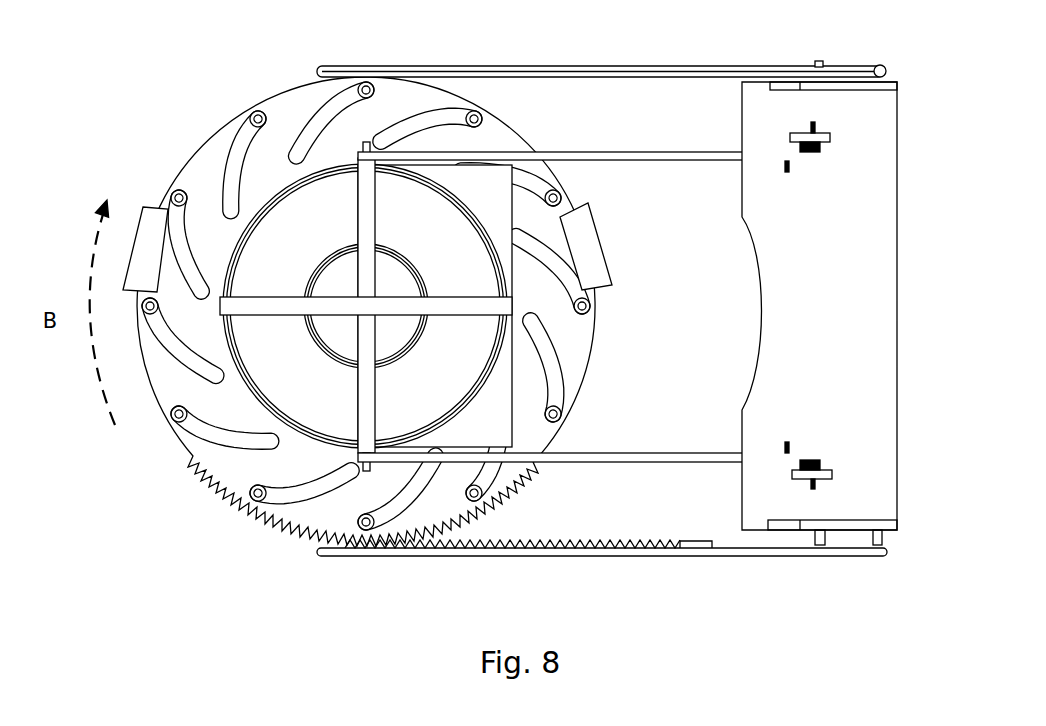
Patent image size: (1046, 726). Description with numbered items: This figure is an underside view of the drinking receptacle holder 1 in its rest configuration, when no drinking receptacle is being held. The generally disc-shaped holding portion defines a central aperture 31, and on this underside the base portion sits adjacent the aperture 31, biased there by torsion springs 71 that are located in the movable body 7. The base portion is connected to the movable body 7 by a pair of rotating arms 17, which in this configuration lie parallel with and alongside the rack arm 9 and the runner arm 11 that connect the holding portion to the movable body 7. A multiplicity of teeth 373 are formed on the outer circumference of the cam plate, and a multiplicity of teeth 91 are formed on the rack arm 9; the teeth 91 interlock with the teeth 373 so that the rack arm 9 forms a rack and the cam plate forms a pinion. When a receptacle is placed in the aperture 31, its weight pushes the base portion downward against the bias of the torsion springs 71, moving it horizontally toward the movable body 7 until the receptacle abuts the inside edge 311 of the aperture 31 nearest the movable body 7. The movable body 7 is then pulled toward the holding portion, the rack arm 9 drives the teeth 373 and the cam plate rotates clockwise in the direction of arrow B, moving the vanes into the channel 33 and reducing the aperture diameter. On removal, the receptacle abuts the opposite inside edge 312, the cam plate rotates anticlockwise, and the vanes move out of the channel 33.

The drinking receptacle holder 1 is at (228, 60).
The movable body 7 is at (810, 212).
The rack arm 9 is at (410, 552).
The runner arm 11 is at (592, 68).
The rotating arms 17 is at (630, 152).
The aperture 31 is at (303, 217).
The channel 33 is at (298, 395).
The torsion springs 71 is at (828, 143).
The teeth of the rack arm 91 is at (540, 535).
The inside edge of the aperture 311 is at (498, 267).
The inside edge of the aperture 312 is at (238, 345).
The teeth of the cam plate 373 is at (240, 527).